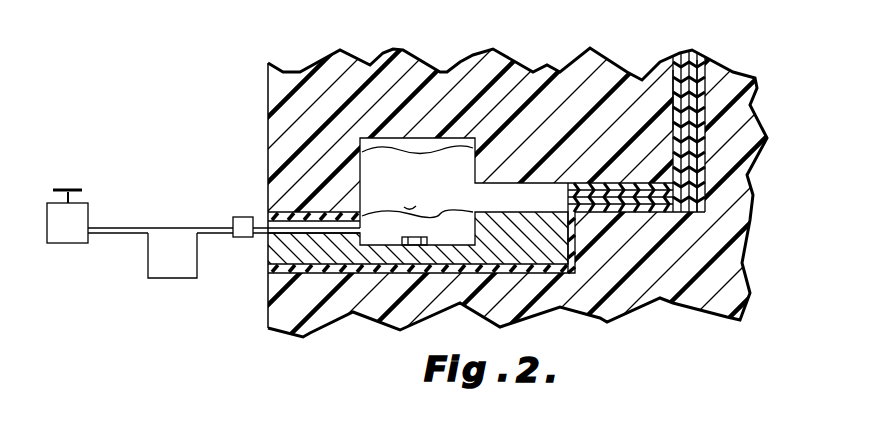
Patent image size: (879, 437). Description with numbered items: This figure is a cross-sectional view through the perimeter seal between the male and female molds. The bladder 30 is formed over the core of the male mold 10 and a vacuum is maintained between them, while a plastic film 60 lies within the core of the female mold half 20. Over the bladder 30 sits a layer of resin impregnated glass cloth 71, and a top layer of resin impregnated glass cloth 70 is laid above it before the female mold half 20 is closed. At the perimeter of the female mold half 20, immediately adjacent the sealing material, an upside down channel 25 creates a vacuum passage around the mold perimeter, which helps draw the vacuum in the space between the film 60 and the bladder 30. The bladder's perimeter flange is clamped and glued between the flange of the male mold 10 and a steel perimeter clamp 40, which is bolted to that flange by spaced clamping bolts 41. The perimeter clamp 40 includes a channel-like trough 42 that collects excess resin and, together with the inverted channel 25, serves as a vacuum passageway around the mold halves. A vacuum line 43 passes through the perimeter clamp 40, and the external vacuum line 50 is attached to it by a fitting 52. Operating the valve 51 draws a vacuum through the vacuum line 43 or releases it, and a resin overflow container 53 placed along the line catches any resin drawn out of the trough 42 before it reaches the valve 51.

The male mold 10 is at (650, 272).
The female mold half 20 is at (548, 70).
The upside down channel 25 is at (464, 183).
The bladder 30 is at (716, 177).
The perimeter clamp 40 is at (513, 233).
The clamping bolts 41 is at (428, 239).
The channel-like trough 42 is at (417, 203).
The vacuum line 43 is at (352, 313).
The external vacuum line 50 is at (118, 236).
The valve 51 is at (86, 203).
The fitting 52 is at (244, 232).
The resin overflow container 53 is at (182, 263).
The plastic film 60 is at (668, 87).
The top layer of resin impregnated glass cloth 70 is at (679, 58).
The layer of resin impregnated glass cloth 71 is at (698, 64).